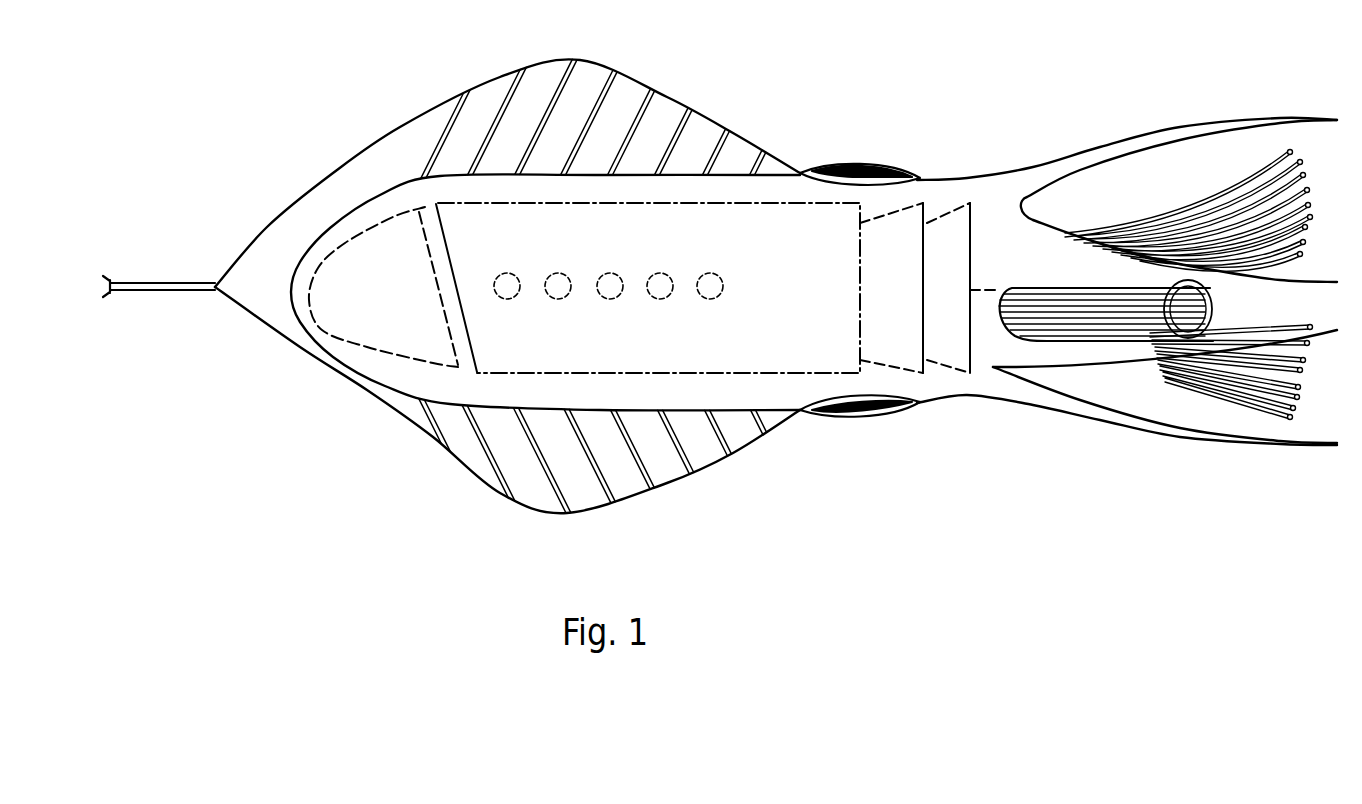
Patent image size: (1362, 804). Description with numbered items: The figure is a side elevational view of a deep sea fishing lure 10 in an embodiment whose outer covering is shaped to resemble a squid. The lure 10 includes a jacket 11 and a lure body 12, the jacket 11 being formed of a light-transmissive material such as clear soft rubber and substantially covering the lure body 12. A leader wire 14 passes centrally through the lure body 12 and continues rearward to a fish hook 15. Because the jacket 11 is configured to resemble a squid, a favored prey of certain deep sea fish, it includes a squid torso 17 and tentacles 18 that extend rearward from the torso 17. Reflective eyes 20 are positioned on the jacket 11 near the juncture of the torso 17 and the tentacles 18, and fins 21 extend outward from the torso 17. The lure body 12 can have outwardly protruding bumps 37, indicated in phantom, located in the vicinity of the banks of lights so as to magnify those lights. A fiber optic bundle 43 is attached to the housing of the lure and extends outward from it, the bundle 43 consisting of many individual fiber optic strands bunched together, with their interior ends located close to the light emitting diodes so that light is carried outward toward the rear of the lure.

The deep sea fishing lure 10 is at (766, 88).
The jacket 11 is at (677, 93).
The lure body 12 is at (730, 360).
The leader wire 14 is at (172, 283).
The fish hook 15 is at (1213, 297).
The squid torso 17 is at (773, 190).
The tentacles 18 is at (1107, 158).
The reflective eyes 20 is at (870, 417).
The fins 21 is at (667, 467).
The outwardly protruding bumps 37 is at (556, 273).
The fiber optic bundle 43 is at (1238, 175).